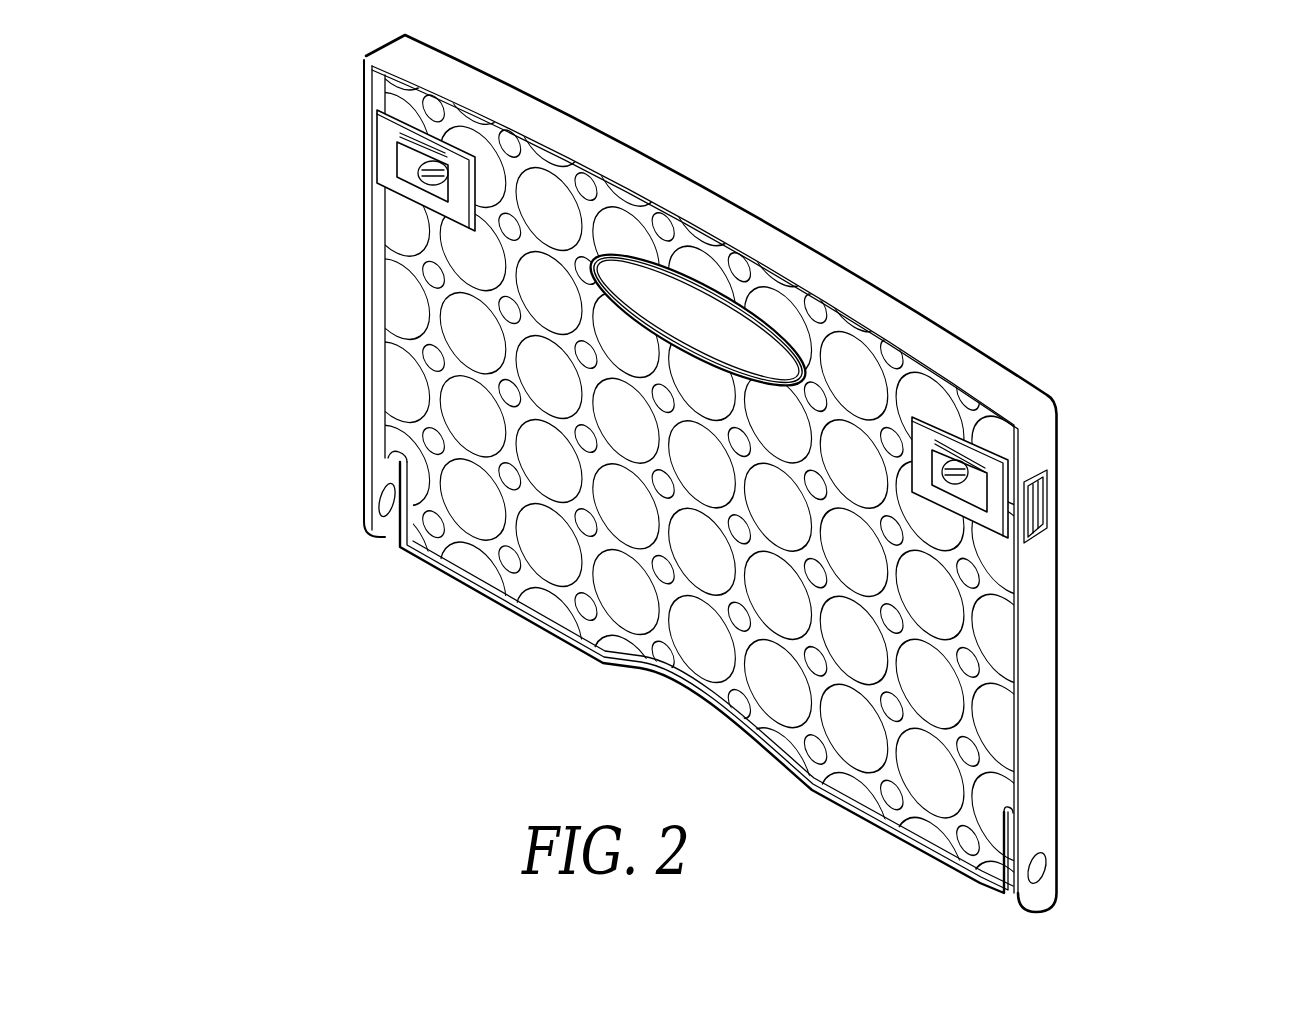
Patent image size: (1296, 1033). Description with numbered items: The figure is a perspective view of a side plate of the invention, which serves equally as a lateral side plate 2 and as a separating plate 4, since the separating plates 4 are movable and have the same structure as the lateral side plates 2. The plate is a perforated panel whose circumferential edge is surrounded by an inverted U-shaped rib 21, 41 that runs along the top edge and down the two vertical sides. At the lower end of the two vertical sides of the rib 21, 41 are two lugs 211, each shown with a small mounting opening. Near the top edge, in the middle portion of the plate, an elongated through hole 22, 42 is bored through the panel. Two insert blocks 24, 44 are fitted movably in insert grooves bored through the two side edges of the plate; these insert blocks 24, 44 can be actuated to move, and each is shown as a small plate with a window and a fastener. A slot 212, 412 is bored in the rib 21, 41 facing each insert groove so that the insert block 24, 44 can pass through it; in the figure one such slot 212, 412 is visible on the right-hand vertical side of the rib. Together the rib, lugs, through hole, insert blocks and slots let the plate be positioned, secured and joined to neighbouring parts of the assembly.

The lateral side plate 2 is at (709, 497).
The separating plate 4 is at (545, 562).
The inverted U-shaped rib 21 is at (749, 481).
The inverted U-shaped rib 41 is at (749, 481).
The lug 211 is at (383, 535).
The slot 212 is at (1139, 548).
The slot 412 is at (1047, 533).
The through hole 22 is at (698, 253).
The through hole 42 is at (692, 305).
The insert block 24 is at (715, 416).
The insert block 44 is at (408, 160).